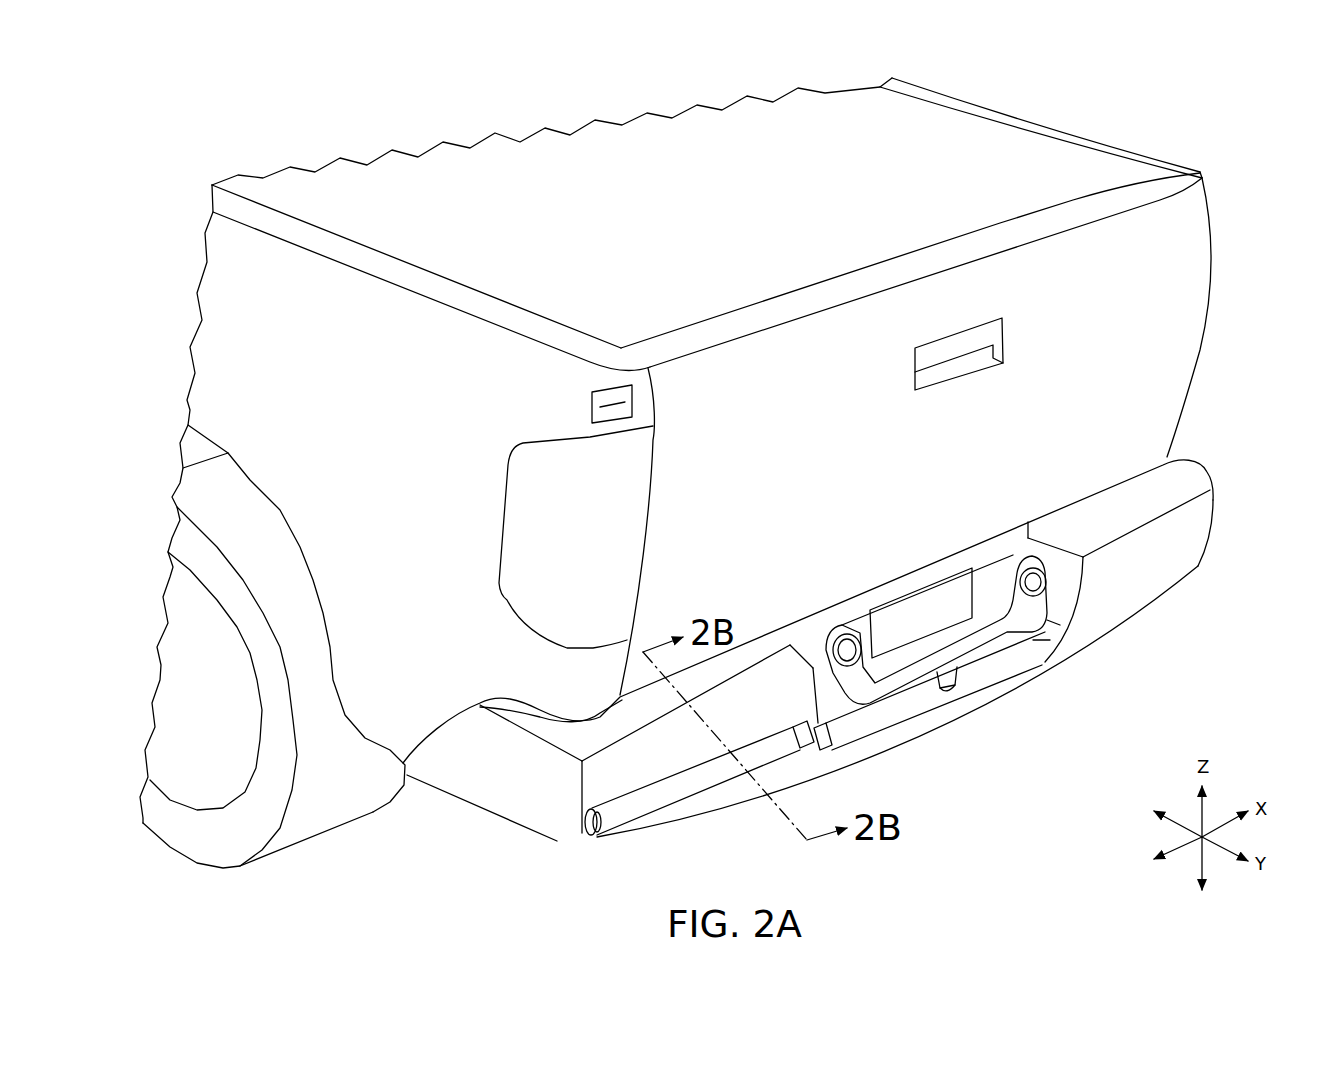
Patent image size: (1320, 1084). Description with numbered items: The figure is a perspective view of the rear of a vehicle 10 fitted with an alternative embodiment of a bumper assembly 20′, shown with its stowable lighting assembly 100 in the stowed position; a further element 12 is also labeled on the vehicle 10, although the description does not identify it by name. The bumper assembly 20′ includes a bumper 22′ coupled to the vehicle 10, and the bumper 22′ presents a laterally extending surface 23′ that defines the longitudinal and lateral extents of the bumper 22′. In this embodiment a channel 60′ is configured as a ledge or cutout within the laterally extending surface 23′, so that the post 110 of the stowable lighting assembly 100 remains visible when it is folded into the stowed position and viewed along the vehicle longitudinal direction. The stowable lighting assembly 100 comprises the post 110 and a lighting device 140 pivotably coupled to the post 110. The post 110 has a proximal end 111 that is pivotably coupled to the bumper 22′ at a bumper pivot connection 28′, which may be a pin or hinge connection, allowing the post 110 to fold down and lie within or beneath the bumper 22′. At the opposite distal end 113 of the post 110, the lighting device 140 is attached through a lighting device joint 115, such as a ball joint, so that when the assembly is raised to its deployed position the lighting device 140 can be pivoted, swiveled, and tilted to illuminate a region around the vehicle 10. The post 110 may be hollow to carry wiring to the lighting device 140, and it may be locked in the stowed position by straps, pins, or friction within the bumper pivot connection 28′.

The vehicle 10 is at (1165, 143).
The bed rail 12 is at (1203, 176).
The bumper assembly 20′ is at (1194, 572).
The bumper 22′ is at (1197, 457).
The laterally extending surface 23′ is at (1150, 588).
The bumper pivot connection 28′ is at (609, 824).
The channel 60′ is at (571, 826).
The stowable lighting assembly 100 is at (990, 558).
The post 110 is at (721, 795).
The proximal end 111 is at (590, 838).
The distal end 113 is at (941, 688).
The lighting device joint 115 is at (956, 686).
The lighting device 140 is at (998, 664).